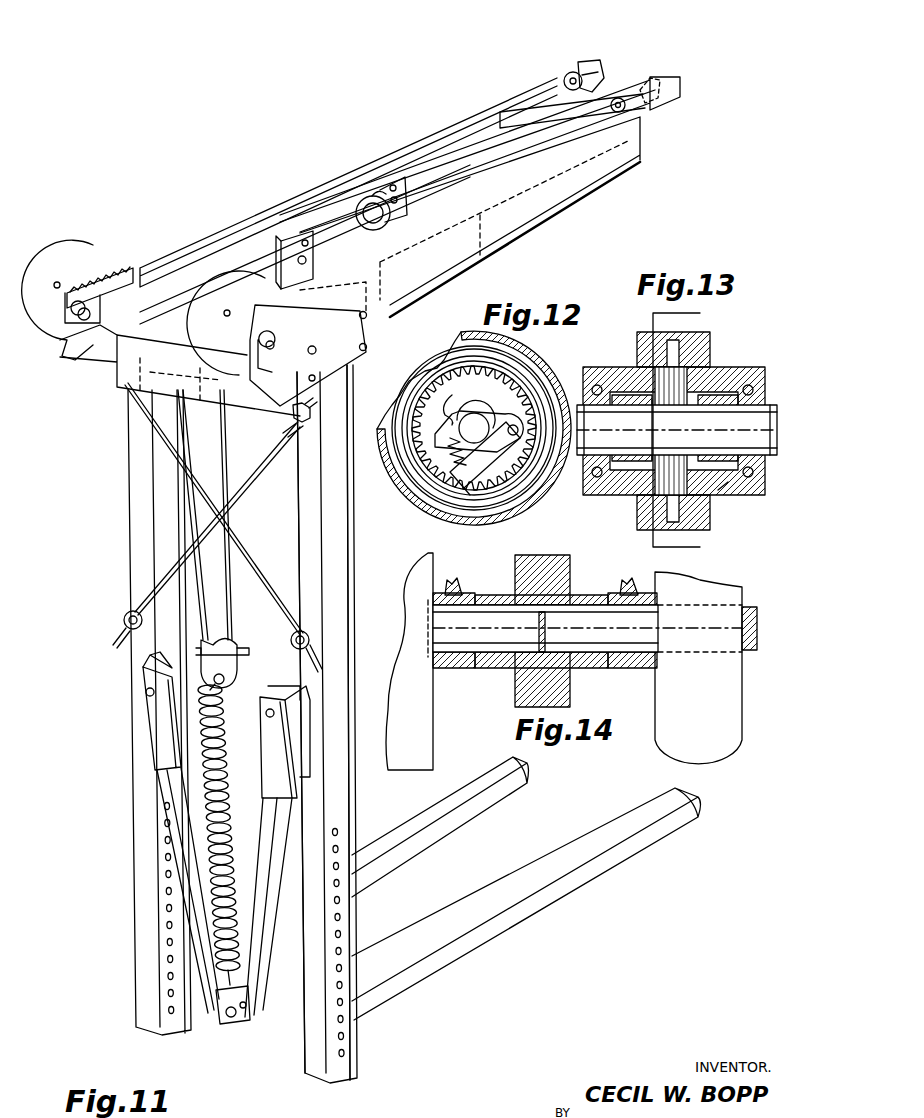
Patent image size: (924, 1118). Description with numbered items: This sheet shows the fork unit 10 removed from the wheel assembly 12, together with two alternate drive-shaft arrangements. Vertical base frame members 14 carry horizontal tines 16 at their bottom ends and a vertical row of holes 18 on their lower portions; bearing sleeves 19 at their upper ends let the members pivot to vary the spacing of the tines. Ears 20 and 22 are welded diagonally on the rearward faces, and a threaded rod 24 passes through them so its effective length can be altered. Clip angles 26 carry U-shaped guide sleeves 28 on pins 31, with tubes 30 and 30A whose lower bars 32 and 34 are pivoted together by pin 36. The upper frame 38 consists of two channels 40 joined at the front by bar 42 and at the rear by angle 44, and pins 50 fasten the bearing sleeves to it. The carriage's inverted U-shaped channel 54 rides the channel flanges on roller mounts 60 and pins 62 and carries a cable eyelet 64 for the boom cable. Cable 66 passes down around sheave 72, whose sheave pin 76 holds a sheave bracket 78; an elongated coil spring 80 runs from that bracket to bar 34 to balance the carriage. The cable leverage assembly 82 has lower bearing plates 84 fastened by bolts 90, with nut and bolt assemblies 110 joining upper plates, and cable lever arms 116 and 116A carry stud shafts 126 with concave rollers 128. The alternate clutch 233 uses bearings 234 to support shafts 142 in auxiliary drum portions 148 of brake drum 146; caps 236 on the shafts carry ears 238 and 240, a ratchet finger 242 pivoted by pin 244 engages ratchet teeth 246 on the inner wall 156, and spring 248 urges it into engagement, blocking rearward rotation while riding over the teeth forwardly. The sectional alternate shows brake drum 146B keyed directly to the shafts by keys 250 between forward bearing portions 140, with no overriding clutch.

In FIG. 11, the fork unit 10 is at (358, 562).
In FIG. 11, the vertical base frame members 14 is at (137, 730).
In FIG. 11, the horizontal tines 16 is at (465, 818).
In FIG. 11, the horizontally extending holes 18 is at (170, 995).
In FIG. 11, the bearing sleeves 19 is at (356, 364).
In FIG. 11, the ears 20 is at (124, 612).
In FIG. 11, the ears 22 is at (300, 448).
In FIG. 11, the rod 24 is at (165, 575).
In FIG. 11, the clip angles 26 is at (160, 662).
In FIG. 11, the U-shaped guide sleeves 28 is at (160, 708).
In FIG. 11, the downwardly extending tube 30 is at (305, 826).
In FIG. 11, the downwardly extending tube 30A is at (180, 845).
In FIG. 11, the pins 31 is at (146, 692).
In FIG. 11, the small bar 32 is at (222, 1027).
In FIG. 11, the bar 34 is at (246, 1025).
In FIG. 11, the pin 36 is at (232, 1030).
In FIG. 11, the upper frame 38 is at (487, 262).
In FIG. 11, the channels 40 is at (530, 213).
In FIG. 11, the bar 42 is at (578, 110).
In FIG. 11, the angle 44 is at (200, 385).
In FIG. 11, the pins 50 is at (288, 418).
In FIG. 11, the inverted U-shaped channel 54 is at (327, 240).
In FIG. 11, the roller mounts 60 is at (262, 255).
In FIG. 11, the pins 62 is at (290, 230).
In FIG. 11, the cable eyelet 64 is at (368, 196).
In FIG. 11, the cable 66 is at (231, 622).
In FIG. 11, the sheave 72 is at (222, 630).
In FIG. 11, the sheave pin 76 is at (242, 654).
In FIG. 11, the sheave bracket 78 is at (228, 680).
In FIG. 11, the elongated coil spring 80 is at (230, 772).
In FIG. 11, the cable leverage assembly 82 is at (65, 243).
In FIG. 11, the lower bearing plates 84 is at (62, 333).
In FIG. 11, the bolts 90 is at (370, 316).
In FIG. 11, the nut and bolt assemblies 110 is at (260, 363).
In FIG. 11, the cable lever arm 116 is at (530, 85).
In FIG. 11, the cable lever arm 116A is at (683, 90).
In FIG. 11, the stud shafts 126 is at (560, 73).
In FIG. 11, the concave shaped rollers 128 is at (645, 88).
In FIG. 13, the wheel assembly 12 is at (663, 435).
In FIG. 14, the forward bearing portions 140 is at (458, 670).
In FIG. 12, the shafts 142 is at (478, 422).
In FIG. 13, the shafts 142 is at (778, 425).
In FIG. 14, the shafts 142 is at (758, 622).
In FIG. 12, the cylindrical brake drum 146 is at (474, 512).
In FIG. 13, the cylindrical brake drum 146 is at (712, 340).
In FIG. 14, the alternate brake drum 146B is at (572, 690).
In FIG. 13, the auxiliary drum portions 148 is at (735, 368).
In FIG. 13, the inner wall 156 is at (720, 490).
In FIG. 12, the clutch 233 is at (406, 425).
In FIG. 13, the bearings 234 is at (765, 400).
In FIG. 12, the caps 236 is at (480, 374).
In FIG. 13, the caps 236 is at (730, 430).
In FIG. 12, the ear 238 is at (453, 407).
In FIG. 12, the ear 240 is at (512, 410).
In FIG. 12, the ratchet finger 242 is at (490, 470).
In FIG. 12, the pin 244 is at (517, 426).
In FIG. 13, the ratchet teeth 246 is at (650, 470).
In FIG. 12, the spring 248 is at (452, 470).
In FIG. 14, the keys 250 is at (572, 640).